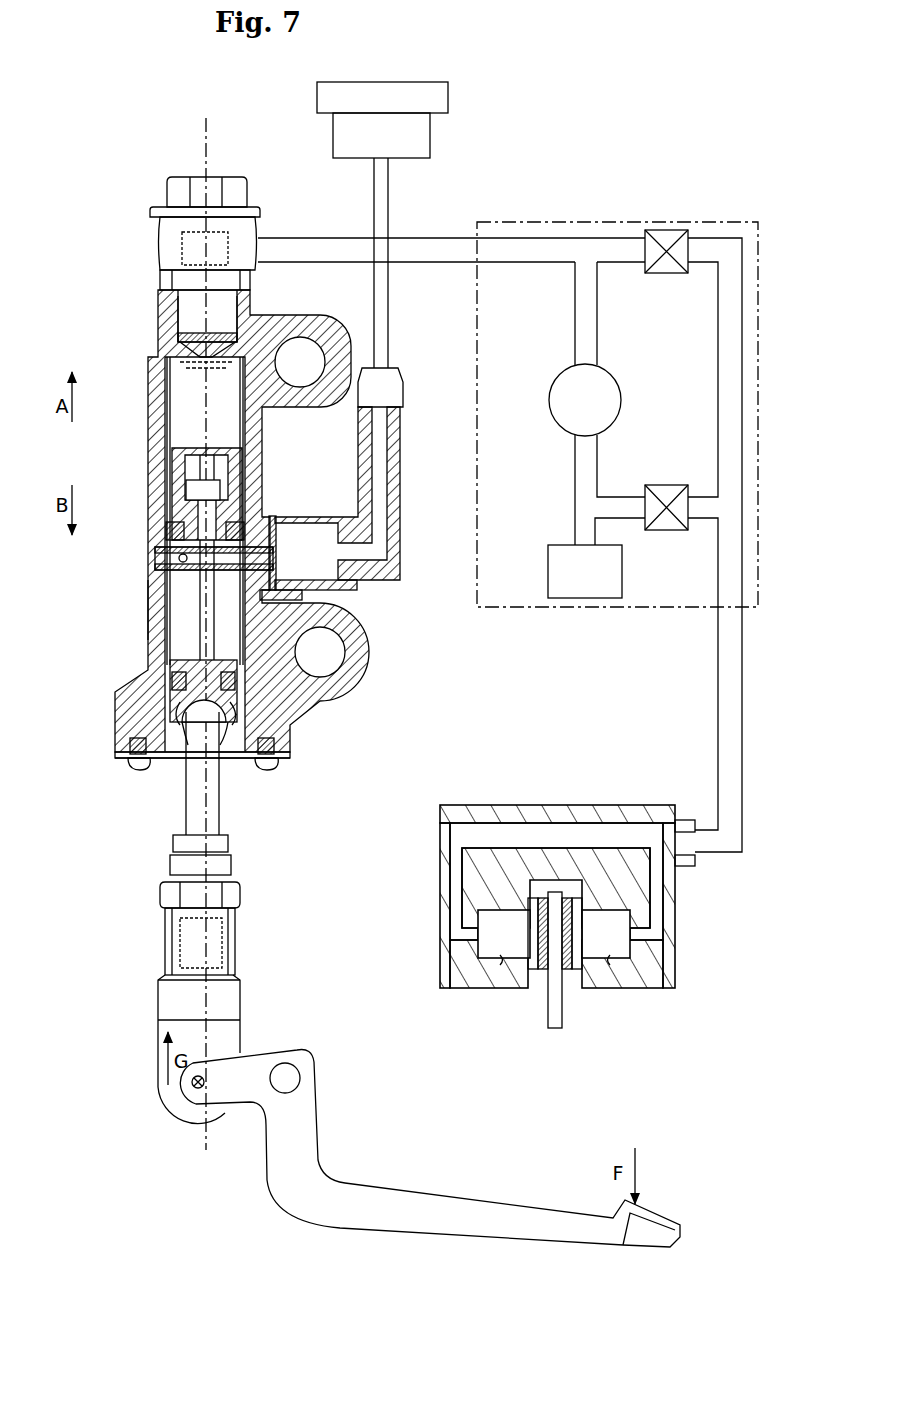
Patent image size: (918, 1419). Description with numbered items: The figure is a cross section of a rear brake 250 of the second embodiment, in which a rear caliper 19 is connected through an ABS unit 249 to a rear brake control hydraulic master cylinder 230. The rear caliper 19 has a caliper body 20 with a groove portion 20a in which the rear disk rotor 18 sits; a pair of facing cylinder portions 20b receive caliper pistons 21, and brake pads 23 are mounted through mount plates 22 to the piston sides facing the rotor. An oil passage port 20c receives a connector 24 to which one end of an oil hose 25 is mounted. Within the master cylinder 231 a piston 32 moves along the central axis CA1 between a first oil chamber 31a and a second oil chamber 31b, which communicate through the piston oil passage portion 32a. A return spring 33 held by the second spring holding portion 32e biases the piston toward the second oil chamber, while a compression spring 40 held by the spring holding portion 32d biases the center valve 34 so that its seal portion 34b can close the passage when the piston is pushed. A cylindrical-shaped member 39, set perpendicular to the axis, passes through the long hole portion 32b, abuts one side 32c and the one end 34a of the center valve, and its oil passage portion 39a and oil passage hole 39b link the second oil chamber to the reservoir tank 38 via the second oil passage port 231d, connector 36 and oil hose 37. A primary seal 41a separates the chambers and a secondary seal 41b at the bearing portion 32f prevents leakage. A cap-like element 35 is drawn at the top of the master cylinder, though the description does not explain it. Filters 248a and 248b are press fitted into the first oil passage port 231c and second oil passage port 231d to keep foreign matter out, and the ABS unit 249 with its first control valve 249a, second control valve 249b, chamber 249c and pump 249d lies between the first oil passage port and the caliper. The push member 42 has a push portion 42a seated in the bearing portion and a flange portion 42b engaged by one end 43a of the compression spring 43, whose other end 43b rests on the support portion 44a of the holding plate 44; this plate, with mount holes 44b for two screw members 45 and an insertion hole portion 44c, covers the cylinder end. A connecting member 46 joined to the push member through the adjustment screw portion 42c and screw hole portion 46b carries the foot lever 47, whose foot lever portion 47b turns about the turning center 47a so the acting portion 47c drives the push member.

The rear disk rotor 18 is at (555, 1030).
The rear caliper 19 is at (630, 778).
The caliper body 20 is at (675, 990).
The groove portion 20a is at (582, 882).
The cylinder portions 20b is at (500, 965).
The oil passage port 20c is at (625, 822).
The caliper pistons 21 is at (500, 932).
The mount plates 22 is at (542, 970).
The brake pads 23 is at (533, 970).
The connector 24 is at (693, 866).
The oil hose 25 is at (745, 726).
The rear brake control hydraulic master cylinder 230 is at (140, 198).
The master cylinder 231 is at (153, 382).
The first oil passage port 231c is at (178, 320).
The second oil passage port 231d is at (302, 597).
The filter 248a is at (178, 338).
The filter 248b is at (357, 585).
The ABS unit 249 is at (622, 220).
The first control valve 249a is at (670, 275).
The second control valve 249b is at (666, 532).
The chamber 249c is at (548, 572).
The pump 249d is at (560, 422).
The rear brake 250 is at (505, 176).
The first oil chamber 31a is at (168, 410).
The second oil chamber 31b is at (165, 598).
The piston 32 is at (166, 546).
The piston oil passage portion 32a is at (170, 527).
The long hole portion 32b is at (247, 657).
The one side of long hole portion 32c is at (277, 518).
The spring holding portion 32d is at (246, 434).
The second spring holding portion 32e is at (250, 513).
The bearing portion 32f is at (214, 662).
The return spring 33 is at (150, 352).
The center valve 34 is at (205, 452).
The one end of center valve 34a is at (211, 580).
The seal portion 34b is at (188, 492).
The reservoir connector 35 is at (165, 245).
The connector 36 is at (400, 528).
The oil hose 37 is at (388, 292).
The reservoir tank 38 is at (448, 96).
The cylindrical-shaped member 39 is at (158, 560).
The oil passage portion 39a is at (178, 572).
The oil passage hole 39b is at (192, 572).
The compression spring 40 is at (206, 446).
The primary seal 41a is at (272, 518).
The secondary seal 41b is at (253, 698).
The push member 42 is at (192, 800).
The push portion 42a is at (192, 712).
The flange portion 42b is at (190, 664).
The adjustment screw portion 42c is at (235, 940).
The compression spring 43 is at (178, 724).
The one end of compression spring 43a is at (233, 756).
The other end of compression spring 43b is at (232, 760).
The holding plate 44 is at (282, 758).
The support portion 44a is at (145, 770).
The mount holes 44b is at (128, 765).
The insertion hole portion 44c is at (172, 765).
The screw members 45 is at (135, 748).
The connecting member 46 is at (243, 992).
The screw hole portion 46b is at (180, 948).
The foot lever 47 is at (350, 1230).
The turning center 47a is at (300, 1078).
The foot lever portion 47b is at (633, 1205).
The acting portion 47c is at (203, 1090).
The central axis CA1 is at (204, 167).